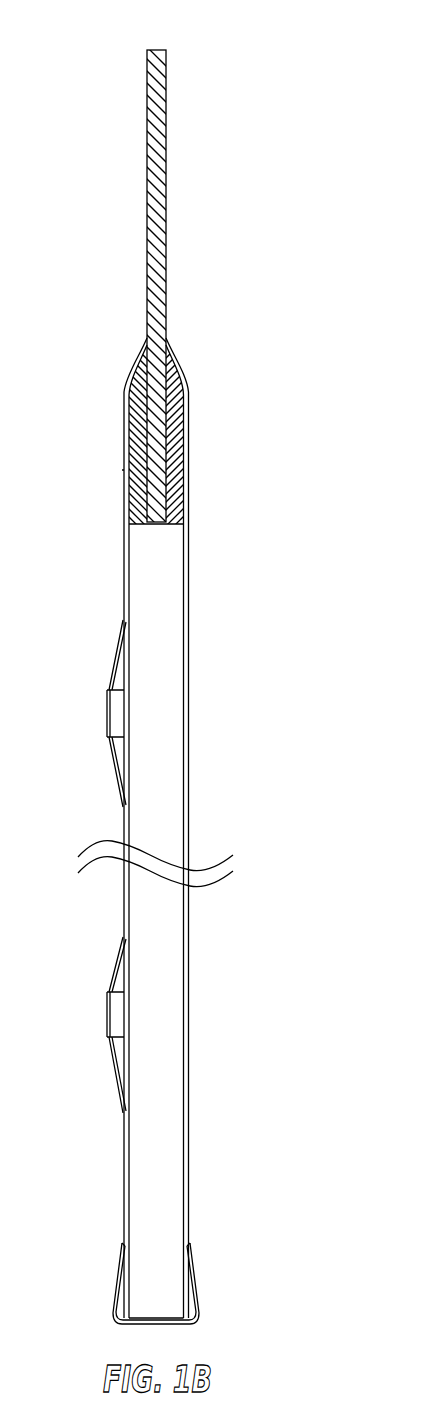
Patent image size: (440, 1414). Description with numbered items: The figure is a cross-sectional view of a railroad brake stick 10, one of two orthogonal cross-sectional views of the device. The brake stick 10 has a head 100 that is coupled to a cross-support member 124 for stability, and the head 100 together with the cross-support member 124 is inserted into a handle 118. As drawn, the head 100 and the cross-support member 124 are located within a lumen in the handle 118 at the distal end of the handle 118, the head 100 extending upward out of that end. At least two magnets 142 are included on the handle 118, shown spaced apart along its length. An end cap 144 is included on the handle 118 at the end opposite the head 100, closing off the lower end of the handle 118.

The railroad brake stick 10 is at (134, 76).
The head 100 is at (172, 768).
The handle 118 is at (174, 565).
The cross-support member 124 is at (176, 482).
The magnets 142 is at (114, 715).
The end cap 144 is at (192, 1300).